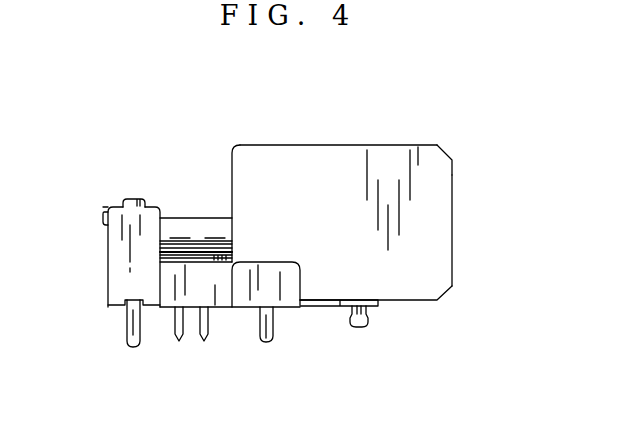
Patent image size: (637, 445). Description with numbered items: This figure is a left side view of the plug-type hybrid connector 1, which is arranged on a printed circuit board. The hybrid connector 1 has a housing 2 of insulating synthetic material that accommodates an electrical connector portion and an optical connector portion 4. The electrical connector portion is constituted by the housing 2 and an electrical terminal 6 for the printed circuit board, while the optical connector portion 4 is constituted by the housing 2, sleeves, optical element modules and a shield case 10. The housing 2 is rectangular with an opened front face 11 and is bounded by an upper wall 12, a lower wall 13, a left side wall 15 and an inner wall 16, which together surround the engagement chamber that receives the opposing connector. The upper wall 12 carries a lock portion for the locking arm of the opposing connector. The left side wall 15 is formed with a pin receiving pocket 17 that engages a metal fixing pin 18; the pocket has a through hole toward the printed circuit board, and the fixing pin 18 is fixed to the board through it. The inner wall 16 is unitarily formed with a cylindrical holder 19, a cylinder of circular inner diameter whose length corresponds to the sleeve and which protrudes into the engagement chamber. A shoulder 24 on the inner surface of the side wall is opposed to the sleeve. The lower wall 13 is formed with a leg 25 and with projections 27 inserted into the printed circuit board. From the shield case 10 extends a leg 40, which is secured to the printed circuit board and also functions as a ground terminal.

The hybrid connector 1 is at (363, 108).
The housing 2 is at (397, 140).
The optical connector portion 4 is at (122, 184).
The electrical terminal 6 is at (203, 335).
The shield case 10 is at (120, 252).
The opened front face 11 is at (454, 221).
The upper wall 12 is at (295, 140).
The lower wall 13 is at (408, 302).
The left side wall 15 is at (431, 264).
The inner wall 16 is at (230, 193).
The pin receiving pocket 17 is at (283, 286).
The fixing pin 18 is at (270, 345).
The cylindrical holder 19 is at (193, 230).
The shoulder 24 is at (178, 264).
The leg 25 is at (218, 290).
The projection 27 is at (357, 328).
The leg 40 is at (137, 349).